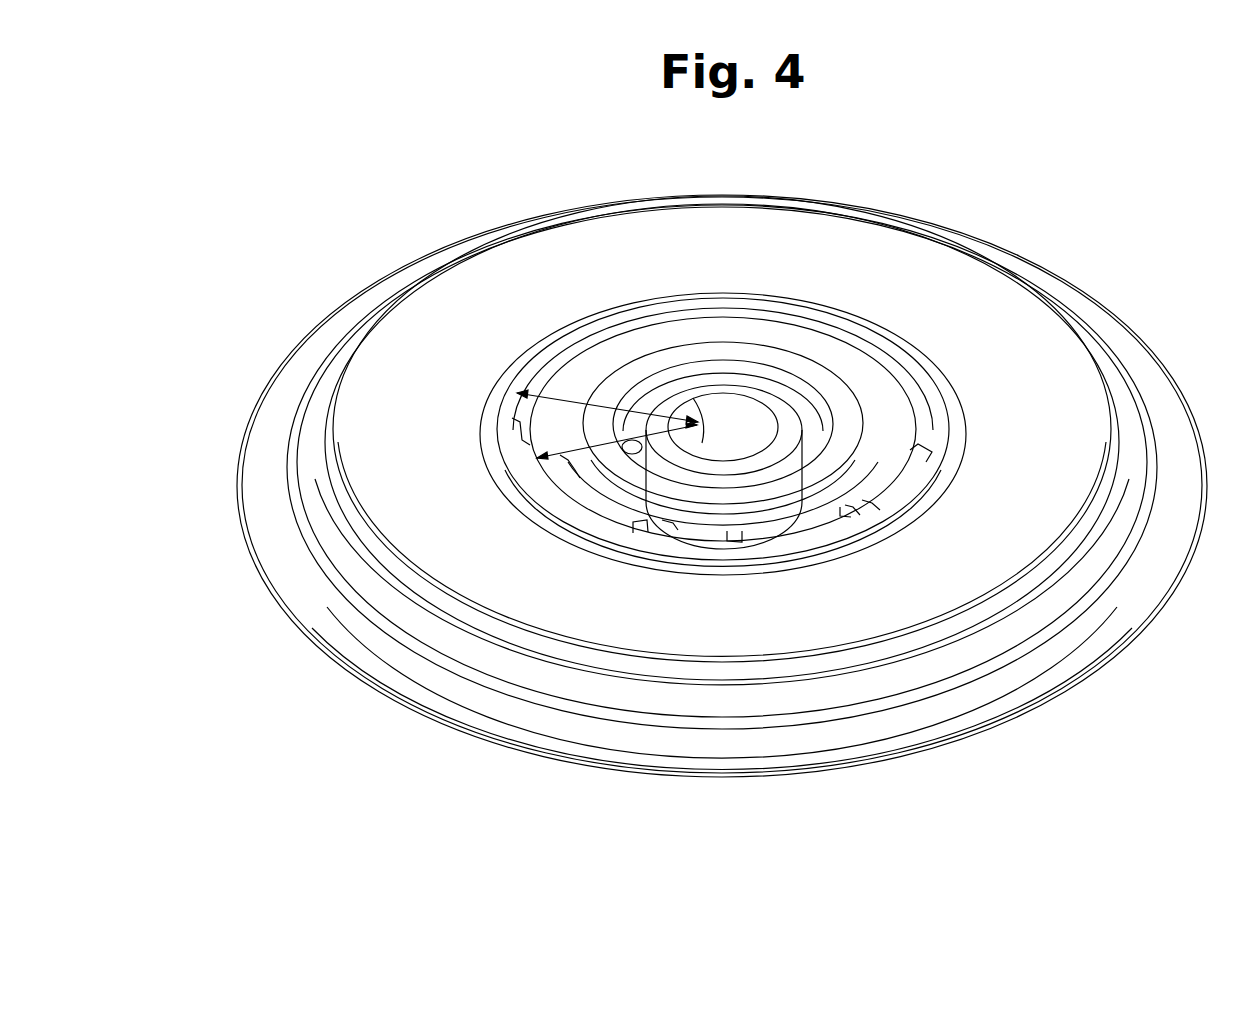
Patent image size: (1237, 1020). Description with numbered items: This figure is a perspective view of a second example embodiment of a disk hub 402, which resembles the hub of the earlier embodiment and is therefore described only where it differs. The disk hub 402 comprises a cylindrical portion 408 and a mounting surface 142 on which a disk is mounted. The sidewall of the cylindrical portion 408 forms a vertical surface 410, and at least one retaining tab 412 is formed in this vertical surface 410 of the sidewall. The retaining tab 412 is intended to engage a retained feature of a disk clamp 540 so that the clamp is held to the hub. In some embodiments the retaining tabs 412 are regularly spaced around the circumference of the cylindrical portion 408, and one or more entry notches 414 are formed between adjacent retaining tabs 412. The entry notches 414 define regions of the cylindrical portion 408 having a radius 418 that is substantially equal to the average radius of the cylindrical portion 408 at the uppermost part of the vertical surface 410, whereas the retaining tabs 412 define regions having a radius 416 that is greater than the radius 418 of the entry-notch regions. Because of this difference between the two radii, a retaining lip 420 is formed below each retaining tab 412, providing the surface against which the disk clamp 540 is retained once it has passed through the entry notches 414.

The disk clamp 540 is at (1133, 193).
The disk hub 402 is at (567, 272).
The mounting surface 142 is at (405, 670).
The retaining tab 412 is at (920, 442).
The radius 416 is at (620, 388).
The radius 418 is at (624, 442).
The retaining lip 420 is at (917, 455).
The cylindrical portion 408 is at (870, 502).
The vertical surface 410 is at (853, 507).
The entry notch 414 is at (673, 523).